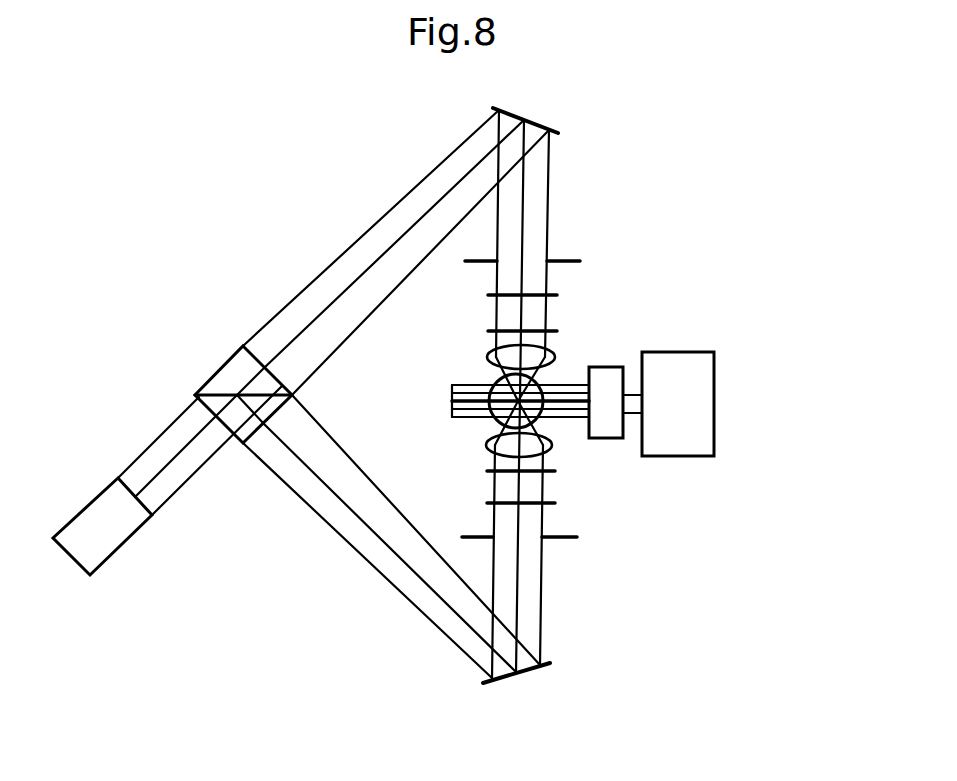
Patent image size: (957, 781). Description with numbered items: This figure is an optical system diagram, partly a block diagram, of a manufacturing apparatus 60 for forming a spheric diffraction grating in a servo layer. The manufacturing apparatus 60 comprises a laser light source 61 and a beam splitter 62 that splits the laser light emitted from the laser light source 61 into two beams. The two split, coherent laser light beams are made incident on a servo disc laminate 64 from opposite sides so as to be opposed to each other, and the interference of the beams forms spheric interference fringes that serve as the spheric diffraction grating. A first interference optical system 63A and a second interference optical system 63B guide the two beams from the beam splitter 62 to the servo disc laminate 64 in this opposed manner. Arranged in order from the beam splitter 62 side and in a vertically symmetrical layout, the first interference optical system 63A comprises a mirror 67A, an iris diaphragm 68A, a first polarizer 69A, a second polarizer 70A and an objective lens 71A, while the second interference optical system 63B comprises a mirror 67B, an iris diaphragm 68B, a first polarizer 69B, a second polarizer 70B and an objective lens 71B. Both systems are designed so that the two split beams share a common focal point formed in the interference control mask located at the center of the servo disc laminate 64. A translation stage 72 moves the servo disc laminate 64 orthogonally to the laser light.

The manufacturing apparatus 60 is at (215, 234).
The laser light source 61 is at (125, 542).
The beam splitter 62 is at (228, 364).
The first interference optical system 63A is at (568, 203).
The second interference optical system 63B is at (557, 585).
The servo disc laminate 64 is at (441, 383).
The mirror 67A is at (514, 108).
The mirror 67B is at (531, 676).
The iris diaphragm 68A is at (568, 259).
The iris diaphragm 68B is at (568, 538).
The first polarizer 69A is at (556, 295).
The first polarizer 69B is at (552, 503).
The second polarizer 70A is at (556, 331).
The second polarizer 70B is at (553, 471).
The objective lens 71A is at (488, 356).
The objective lens 71B is at (488, 445).
The translation stage 72 is at (714, 401).